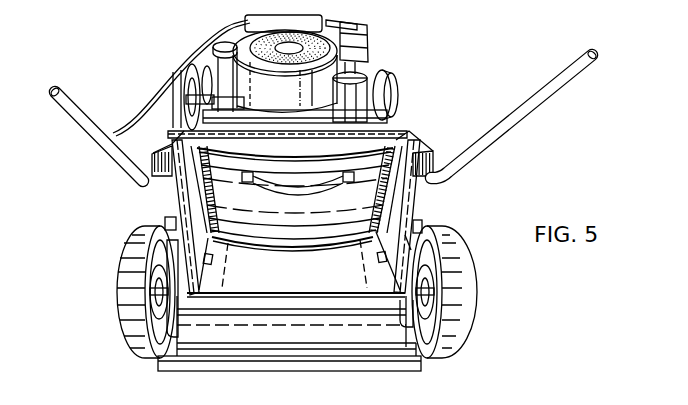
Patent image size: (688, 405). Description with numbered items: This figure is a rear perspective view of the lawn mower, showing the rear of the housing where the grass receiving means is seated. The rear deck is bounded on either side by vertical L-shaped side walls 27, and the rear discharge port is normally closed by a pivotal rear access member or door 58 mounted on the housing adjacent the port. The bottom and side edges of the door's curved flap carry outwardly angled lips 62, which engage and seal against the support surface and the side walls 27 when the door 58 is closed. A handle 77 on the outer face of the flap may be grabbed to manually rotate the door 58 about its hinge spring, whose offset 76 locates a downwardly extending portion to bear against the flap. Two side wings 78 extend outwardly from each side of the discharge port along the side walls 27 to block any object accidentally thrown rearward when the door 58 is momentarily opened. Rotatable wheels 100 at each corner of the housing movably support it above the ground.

The side wall 27 is at (410, 250).
The door 58 is at (372, 164).
The lip 62 is at (263, 243).
The offset 76 is at (297, 283).
The handle 77 is at (311, 193).
The side wing 78 is at (174, 190).
The wheel 100 is at (122, 262).